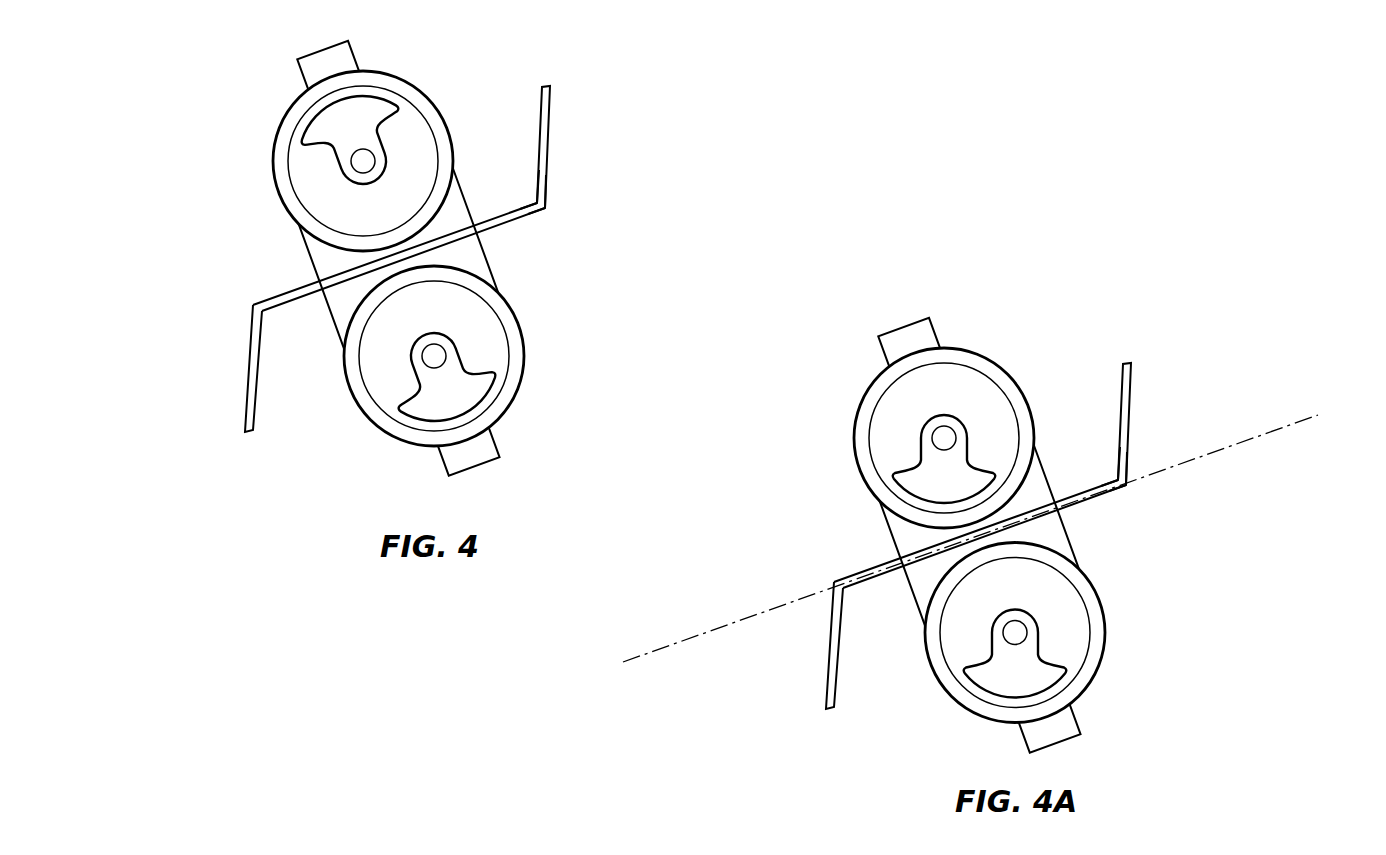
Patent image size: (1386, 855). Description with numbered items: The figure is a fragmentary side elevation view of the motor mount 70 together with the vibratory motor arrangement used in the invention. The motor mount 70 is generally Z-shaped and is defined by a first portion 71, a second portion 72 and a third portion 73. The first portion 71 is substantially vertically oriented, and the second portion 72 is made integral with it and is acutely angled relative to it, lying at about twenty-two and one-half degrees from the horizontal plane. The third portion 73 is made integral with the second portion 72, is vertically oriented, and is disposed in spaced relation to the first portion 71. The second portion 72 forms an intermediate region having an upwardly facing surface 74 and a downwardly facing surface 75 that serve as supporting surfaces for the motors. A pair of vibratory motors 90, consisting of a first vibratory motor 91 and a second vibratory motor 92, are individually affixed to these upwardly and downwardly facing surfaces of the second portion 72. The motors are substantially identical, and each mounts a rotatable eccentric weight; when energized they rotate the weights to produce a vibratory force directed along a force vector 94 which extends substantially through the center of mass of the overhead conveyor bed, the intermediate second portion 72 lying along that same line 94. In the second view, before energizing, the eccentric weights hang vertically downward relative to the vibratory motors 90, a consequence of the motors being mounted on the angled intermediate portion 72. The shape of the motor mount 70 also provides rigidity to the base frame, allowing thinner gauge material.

In FIG. 4, the motor mount 70 is at (603, 190).
In FIG. 4A, the motor mount 70 is at (743, 593).
In FIG. 4, the first portion 71 is at (247, 367).
In FIG. 4A, the first portion 71 is at (830, 645).
In FIG. 4, the second portion 72 is at (404, 260).
In FIG. 4A, the second portion 72 is at (987, 537).
In FIG. 4, the third portion 73 is at (548, 128).
In FIG. 4A, the third portion 73 is at (1132, 408).
In FIG. 4, the upwardly facing surface 74 is at (502, 217).
In FIG. 4A, the upwardly facing surface 74 is at (1085, 493).
In FIG. 4, the downwardly facing surface 75 is at (525, 220).
In FIG. 4A, the downwardly facing surface 75 is at (1108, 495).
In FIG. 4, the vibratory motors 90 is at (453, 78).
In FIG. 4A, the vibratory motors 90 is at (990, 343).
In FIG. 4, the first vibratory motor 91 is at (305, 151).
In FIG. 4A, the first vibratory motor 91 is at (894, 438).
In FIG. 4, the second vibratory motor 92 is at (478, 356).
In FIG. 4A, the second vibratory motor 92 is at (1058, 633).
In FIG. 4A, the force vector 94 is at (1218, 452).